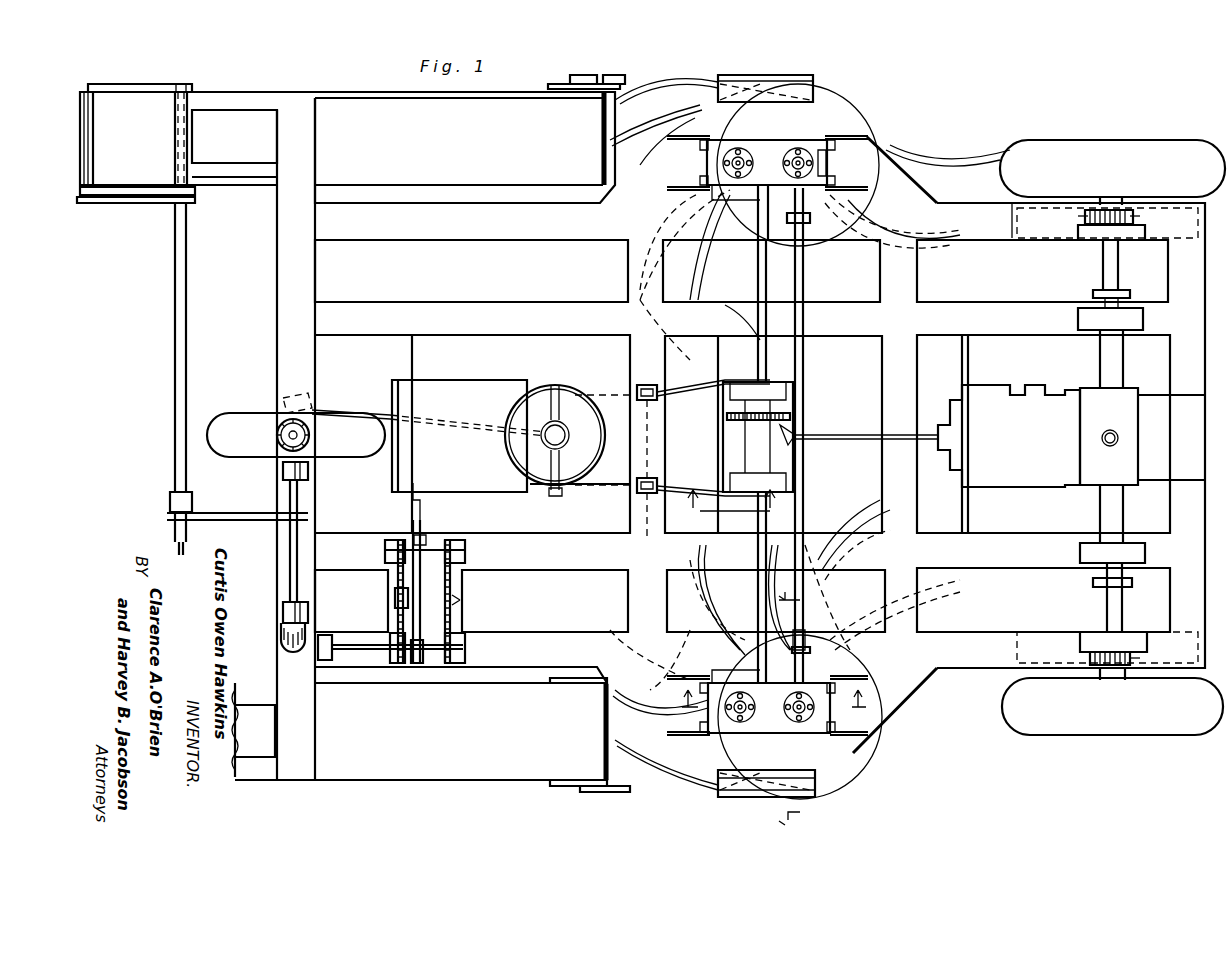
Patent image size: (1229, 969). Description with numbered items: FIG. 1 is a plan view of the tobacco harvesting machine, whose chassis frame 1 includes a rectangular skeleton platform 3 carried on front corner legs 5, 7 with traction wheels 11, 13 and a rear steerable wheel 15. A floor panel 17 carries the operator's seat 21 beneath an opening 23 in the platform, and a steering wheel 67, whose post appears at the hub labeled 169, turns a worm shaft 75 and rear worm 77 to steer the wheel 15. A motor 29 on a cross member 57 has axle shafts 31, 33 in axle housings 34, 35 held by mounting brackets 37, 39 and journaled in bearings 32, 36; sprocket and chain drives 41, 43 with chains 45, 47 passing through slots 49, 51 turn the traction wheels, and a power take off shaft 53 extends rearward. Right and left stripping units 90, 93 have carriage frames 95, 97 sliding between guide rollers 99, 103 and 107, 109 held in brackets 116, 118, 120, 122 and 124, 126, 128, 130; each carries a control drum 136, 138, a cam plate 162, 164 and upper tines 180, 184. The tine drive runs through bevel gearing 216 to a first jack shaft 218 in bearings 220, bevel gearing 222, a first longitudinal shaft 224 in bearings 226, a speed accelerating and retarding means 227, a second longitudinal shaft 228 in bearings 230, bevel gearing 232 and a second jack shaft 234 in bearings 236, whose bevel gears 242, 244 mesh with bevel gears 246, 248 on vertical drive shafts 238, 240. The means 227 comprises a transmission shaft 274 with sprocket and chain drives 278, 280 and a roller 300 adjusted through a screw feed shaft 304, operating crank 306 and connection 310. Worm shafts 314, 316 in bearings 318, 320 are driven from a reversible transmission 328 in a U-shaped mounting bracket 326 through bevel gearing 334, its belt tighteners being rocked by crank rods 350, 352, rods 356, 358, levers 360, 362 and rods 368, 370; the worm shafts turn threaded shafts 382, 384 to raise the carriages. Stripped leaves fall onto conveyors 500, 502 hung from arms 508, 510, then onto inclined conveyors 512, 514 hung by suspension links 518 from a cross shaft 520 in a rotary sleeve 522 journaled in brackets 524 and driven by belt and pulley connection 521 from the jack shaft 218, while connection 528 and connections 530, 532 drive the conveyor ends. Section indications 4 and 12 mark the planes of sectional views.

The chassis frame 1 is at (475, 220).
The platform 3 is at (425, 238).
The front corner leg 5 is at (1180, 650).
The front corner leg 7 is at (1180, 225).
The traction wheel 11 is at (1148, 722).
The traction wheel 13 is at (1160, 148).
The rear steerable wheel 15 is at (228, 448).
The floor panel 17 is at (575, 490).
The operator's seat 21 is at (452, 385).
The opening 23 is at (465, 340).
The motor 29 is at (1071, 436).
The axle shaft 31 is at (1103, 262).
The bearing 32 is at (1130, 242).
The axle shaft 33 is at (1107, 606).
The axle housing 34 is at (1100, 368).
The axle housing 35 is at (1100, 504).
The bearing 36 is at (1135, 635).
The mounting bracket 37 is at (1088, 238).
The mounting bracket 39 is at (1145, 552).
The sprocket and chain drive 41 is at (1082, 222).
The sprocket and chain drive 43 is at (1140, 655).
The chain 45 is at (1118, 212).
The chain 47 is at (1097, 666).
The slot 49 is at (1140, 224).
The slot 51 is at (1088, 658).
The power take off shaft 53 is at (830, 434).
The cross member 57 is at (966, 362).
The steering wheel 67 is at (545, 388).
The worm shaft 75 is at (350, 412).
The worm 77 is at (300, 395).
The right stripping unit 90 is at (892, 739).
The left stripping unit 93 is at (882, 110).
The carriage frame 95 is at (769, 708).
The carriage frame 97 is at (767, 162).
The guide roller 99 is at (700, 686).
The guide roller 103 is at (832, 678).
The guide roller 107 is at (700, 145).
The guide roller 109 is at (822, 178).
The bracket 116 is at (678, 135).
The bracket 118 is at (672, 186).
The bracket 120 is at (870, 136).
The bracket 122 is at (868, 192).
The bracket 124 is at (680, 675).
The bracket 126 is at (660, 735).
The bracket 128 is at (870, 675).
The bracket 130 is at (868, 740).
The control drum 136 is at (826, 780).
The control drum 138 is at (845, 108).
The cam plate 162 is at (740, 797).
The cam plate 164 is at (735, 76).
The hub 169 is at (560, 440).
The upper stripping tines 180 is at (810, 632).
The upper stripping tines 184 is at (855, 290).
The bevel gearing 216 is at (300, 448).
The first jack shaft 218 is at (290, 570).
The bearings 220 is at (306, 480).
The bevel gearing 222 is at (282, 650).
The first longitudinal shaft 224 is at (366, 652).
The bearings 226 is at (328, 662).
The speed accelerating and retarding means 227 is at (460, 600).
The second longitudinal drive transmitting shaft 228 is at (568, 630).
The bearings 230 is at (460, 663).
The bevel gearing 232 is at (800, 630).
The second transverse jack shaft 234 is at (805, 553).
The bearings 236 is at (850, 268).
The right vertical drive shaft 238 is at (799, 722).
The left vertical drive shaft 240 is at (800, 152).
The bevel gear 242 is at (812, 698).
The bevel gear 244 is at (810, 216).
The bevel gear 246 is at (790, 720).
The bevel gear 248 is at (783, 150).
The transmission shaft 274 is at (437, 548).
The sprocket and chain drive 278 is at (396, 578).
The sprocket and chain drive 280 is at (452, 615).
The roller 300 is at (395, 600).
The screw feed shaft 304 is at (413, 518).
The operating crank 306 is at (418, 488).
The connection 310 is at (417, 665).
The right worm shaft 314 is at (766, 530).
The left worm shaft 316 is at (756, 318).
The bearing 318 is at (736, 676).
The bearing 320 is at (745, 198).
The U-shaped mounting bracket 326 is at (728, 450).
The reversible transmission 328 is at (728, 430).
The bevel gearing 334 is at (790, 440).
The crank rod 350 is at (552, 495).
The crank rod 352 is at (556, 385).
The pivoted rod 356 is at (608, 495).
The pivoted rod 358 is at (606, 380).
The upright lever 360 is at (645, 495).
The upright lever 362 is at (647, 384).
The pivoted rod 368 is at (705, 493).
The pivoted rod 370 is at (688, 390).
The threaded vertical shaft 382 is at (742, 722).
The threaded shaft 384 is at (742, 154).
The endless belt conveyor 500 is at (606, 722).
The endless belt conveyor 502 is at (608, 115).
The arms 508 is at (552, 685).
The arms 510 is at (565, 84).
The inclined endless belt conveyor 512 is at (413, 770).
The inclined endless belt conveyor 514 is at (343, 92).
The suspension links 518 is at (146, 88).
The rear cross shaft 520 is at (180, 84).
The belt and pulley connection 521 is at (232, 522).
The rotary sleeve 522 is at (175, 296).
The brackets 524 is at (222, 170).
The belt and pulley connection 528 is at (160, 205).
The belt and pulley connection 530 is at (612, 794).
The belt and pulley connection 532 is at (605, 75).
The section line 4 is at (765, 703).
The section line 12 is at (730, 506).